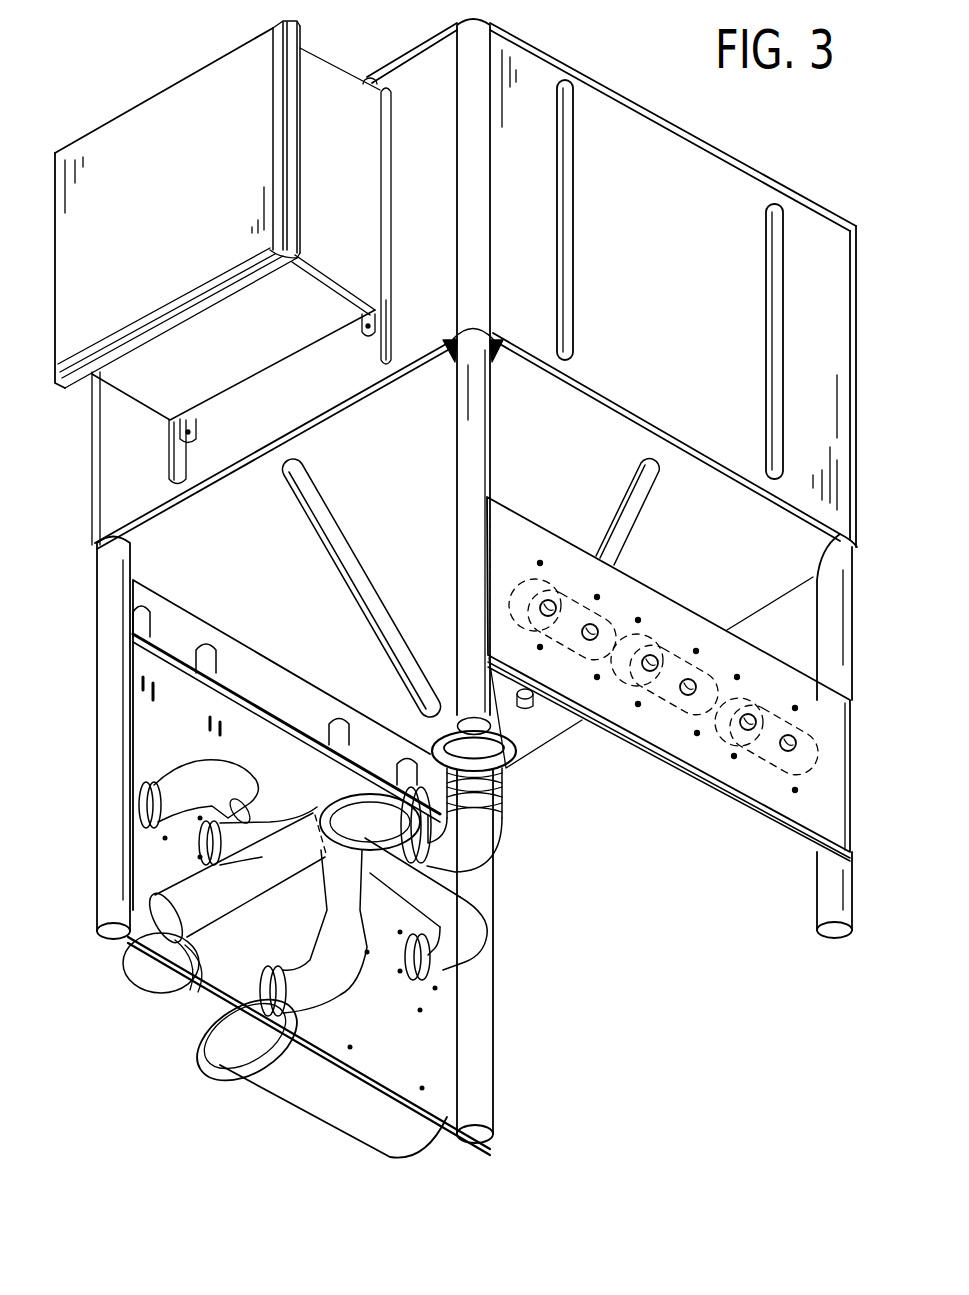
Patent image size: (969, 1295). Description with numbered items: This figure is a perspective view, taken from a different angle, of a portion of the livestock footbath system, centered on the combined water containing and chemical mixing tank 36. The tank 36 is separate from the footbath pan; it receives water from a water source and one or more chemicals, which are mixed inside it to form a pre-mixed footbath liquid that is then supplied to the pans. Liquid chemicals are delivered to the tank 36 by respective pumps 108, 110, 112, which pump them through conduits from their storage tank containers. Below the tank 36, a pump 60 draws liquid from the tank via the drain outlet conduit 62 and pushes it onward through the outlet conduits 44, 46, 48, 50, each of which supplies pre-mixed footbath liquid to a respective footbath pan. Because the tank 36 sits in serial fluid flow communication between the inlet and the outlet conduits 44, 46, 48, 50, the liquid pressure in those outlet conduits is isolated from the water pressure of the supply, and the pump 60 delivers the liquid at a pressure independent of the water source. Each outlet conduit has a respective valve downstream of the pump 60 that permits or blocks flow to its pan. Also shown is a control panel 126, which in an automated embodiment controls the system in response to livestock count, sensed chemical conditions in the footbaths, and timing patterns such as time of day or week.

The combined water containing and chemical mixing tank 36 is at (829, 211).
The control panel 126 is at (182, 212).
The pump 108 is at (541, 671).
The pump 110 is at (636, 724).
The pump 112 is at (734, 781).
The drain outlet conduit 62 is at (487, 840).
The outlet conduit 46 is at (373, 940).
The outlet conduit 44 is at (438, 967).
The outlet conduit 50 is at (150, 797).
The outlet conduit 48 is at (205, 846).
The pump 60 is at (293, 1102).